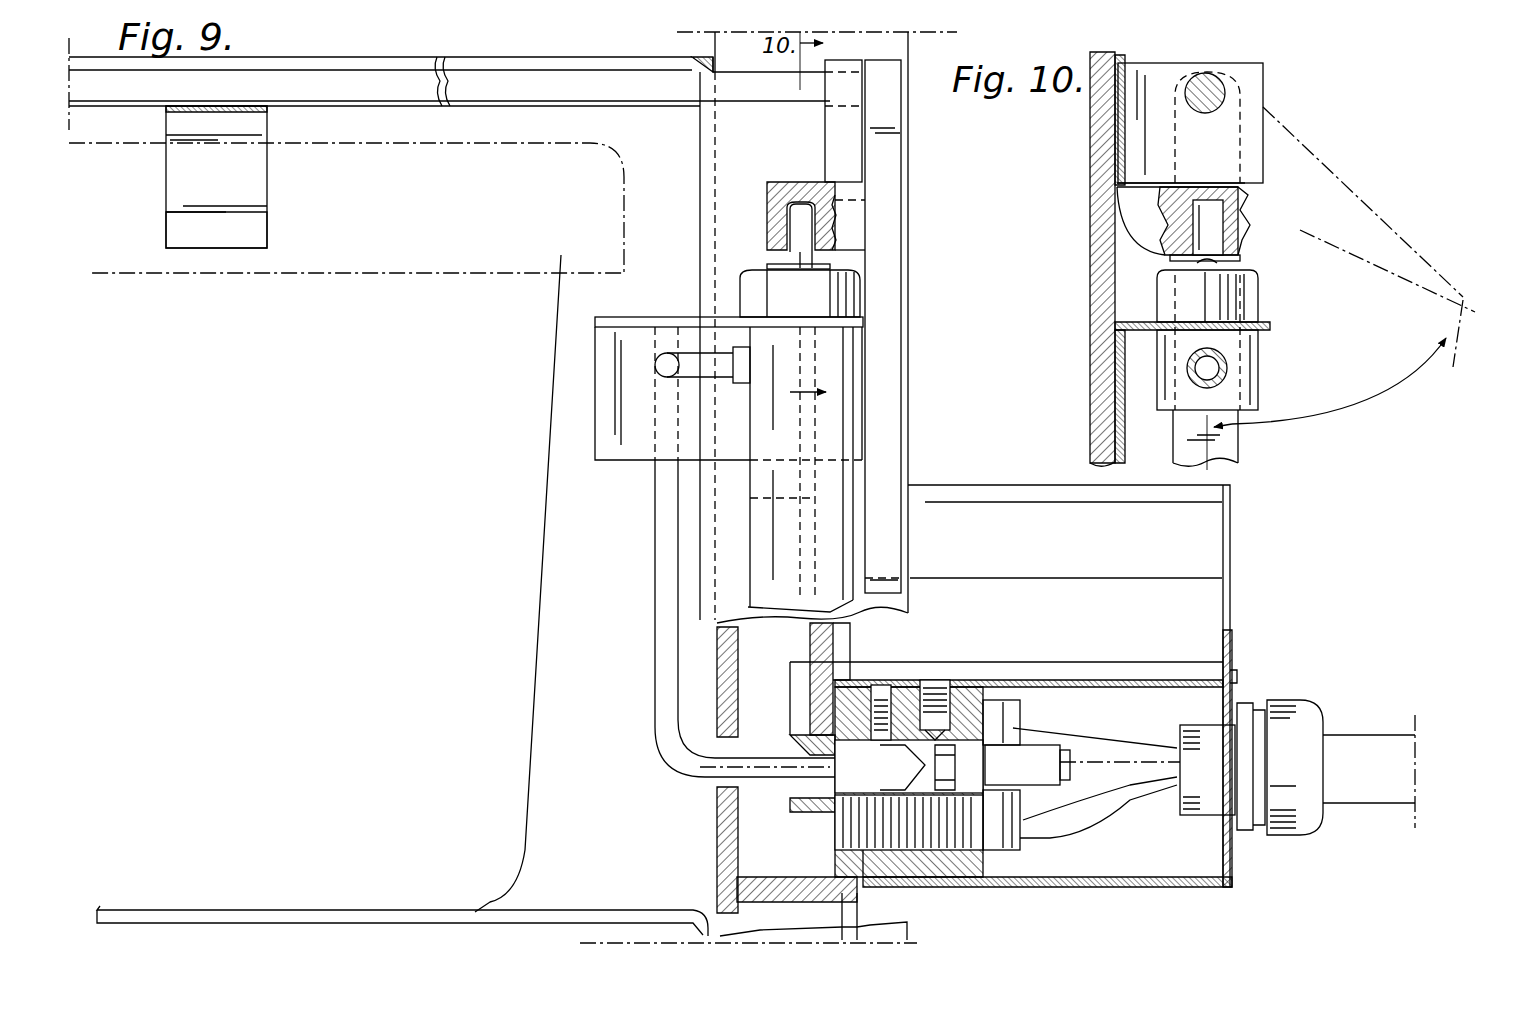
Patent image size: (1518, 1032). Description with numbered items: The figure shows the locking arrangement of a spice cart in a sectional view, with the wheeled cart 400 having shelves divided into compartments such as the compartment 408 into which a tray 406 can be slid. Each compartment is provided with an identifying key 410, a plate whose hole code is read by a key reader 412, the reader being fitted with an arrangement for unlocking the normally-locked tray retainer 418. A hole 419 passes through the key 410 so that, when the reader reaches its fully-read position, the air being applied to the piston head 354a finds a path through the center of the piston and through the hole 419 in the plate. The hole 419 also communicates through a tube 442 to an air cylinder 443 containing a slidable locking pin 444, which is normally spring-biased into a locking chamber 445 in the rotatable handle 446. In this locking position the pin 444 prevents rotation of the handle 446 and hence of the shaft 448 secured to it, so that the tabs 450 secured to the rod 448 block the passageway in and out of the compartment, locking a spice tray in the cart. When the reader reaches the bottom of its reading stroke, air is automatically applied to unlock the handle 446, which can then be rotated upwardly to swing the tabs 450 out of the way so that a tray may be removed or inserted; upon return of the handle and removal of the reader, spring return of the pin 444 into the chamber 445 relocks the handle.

In FIG. 9, the wheeled cart 400 is at (985, 152).
In FIG. 9, the tray 406 is at (527, 697).
In FIG. 9, the compartment 408 is at (602, 816).
In FIG. 9, the key 410 is at (830, 640).
In FIG. 9, the key reader 412 is at (1067, 667).
In FIG. 9, the tray retainer 418 is at (265, 183).
In FIG. 9, the hole 419 is at (810, 747).
In FIG. 9, the tube 442 is at (657, 562).
In FIG. 10, the tube 442 is at (1207, 383).
In FIG. 9, the air cylinder 443 is at (833, 425).
In FIG. 10, the air cylinder 443 is at (1258, 363).
In FIG. 9, the locking pin 444 is at (797, 228).
In FIG. 10, the locking pin 444 is at (1230, 253).
In FIG. 9, the locking chamber 445 is at (790, 193).
In FIG. 10, the locking chamber 445 is at (1212, 218).
In FIG. 9, the rotatable handle 446 is at (887, 283).
In FIG. 10, the rotatable handle 446 is at (1385, 242).
In FIG. 9, the shaft 448 is at (535, 87).
In FIG. 9, the tab 450 is at (252, 232).
In FIG. 9, the piston head 354a is at (945, 830).